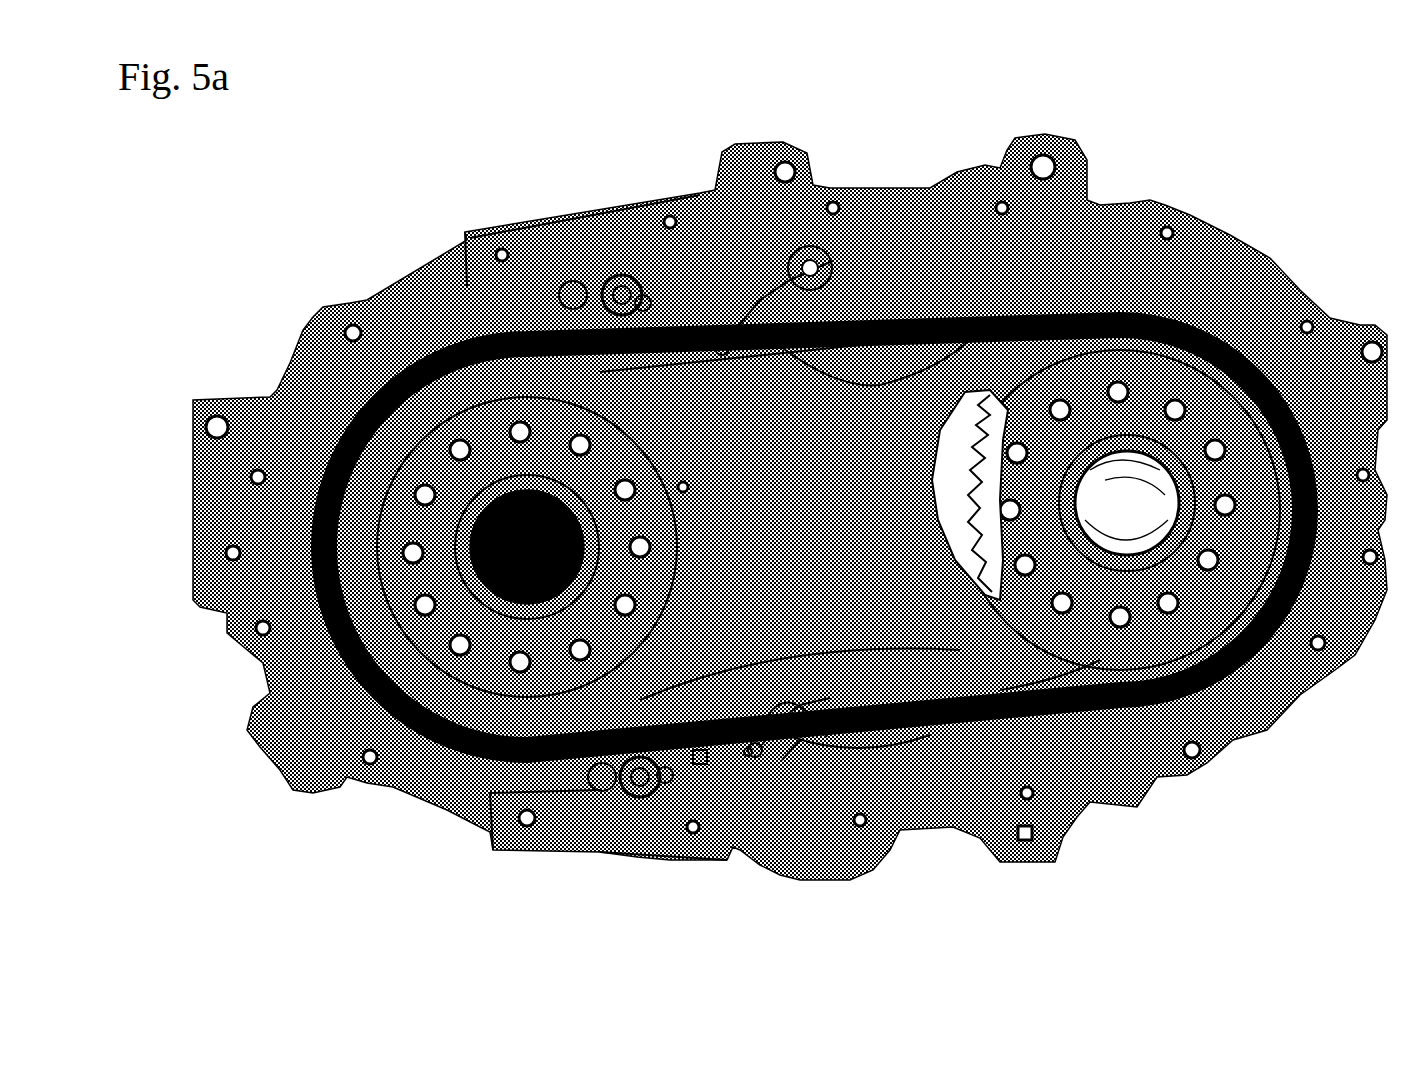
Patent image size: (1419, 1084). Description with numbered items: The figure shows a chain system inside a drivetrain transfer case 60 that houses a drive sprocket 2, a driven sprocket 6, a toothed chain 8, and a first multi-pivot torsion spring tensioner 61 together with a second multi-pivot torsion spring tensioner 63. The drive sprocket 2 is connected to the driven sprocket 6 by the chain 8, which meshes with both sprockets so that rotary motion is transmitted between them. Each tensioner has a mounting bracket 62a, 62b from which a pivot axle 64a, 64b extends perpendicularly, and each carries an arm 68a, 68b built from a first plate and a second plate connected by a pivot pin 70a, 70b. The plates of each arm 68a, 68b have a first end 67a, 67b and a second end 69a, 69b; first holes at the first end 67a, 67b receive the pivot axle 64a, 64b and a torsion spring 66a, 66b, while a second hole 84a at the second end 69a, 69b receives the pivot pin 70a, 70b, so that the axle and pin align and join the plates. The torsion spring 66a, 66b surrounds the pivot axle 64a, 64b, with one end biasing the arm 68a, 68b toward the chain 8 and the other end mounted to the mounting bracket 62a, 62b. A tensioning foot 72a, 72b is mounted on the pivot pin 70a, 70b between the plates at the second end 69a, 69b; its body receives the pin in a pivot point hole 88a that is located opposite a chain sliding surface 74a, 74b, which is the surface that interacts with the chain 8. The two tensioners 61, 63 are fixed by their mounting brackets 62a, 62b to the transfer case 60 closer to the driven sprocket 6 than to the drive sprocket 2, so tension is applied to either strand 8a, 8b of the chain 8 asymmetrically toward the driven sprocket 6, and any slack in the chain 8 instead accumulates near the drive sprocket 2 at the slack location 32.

The drive sprocket 2 is at (1210, 590).
The driven sprocket 6 is at (450, 650).
The chain 8 is at (355, 590).
The first strand 8a is at (668, 400).
The second strand 8b is at (877, 653).
The slack location 32 is at (1065, 672).
The drivetrain transfer case 60 is at (1253, 733).
The first multi-pivot torsion spring tensioner 61 is at (577, 203).
The mounting bracket 62a is at (488, 838).
The mounting bracket 62b is at (530, 230).
The second multi-pivot torsion spring tensioner 63 is at (570, 847).
The pivot axle 64a is at (643, 783).
The pivot axle 64b is at (622, 290).
The torsion spring 66a is at (602, 777).
The torsion spring 66b is at (573, 282).
The first end 67a is at (665, 775).
The first end 67b is at (641, 300).
The arm 68a is at (680, 765).
The arm 68b is at (697, 340).
The second end 69a is at (755, 750).
The second end 69b is at (722, 345).
The pivot pin 70a is at (762, 745).
The pivot pin 70b is at (745, 350).
The tensioning foot 72a is at (772, 750).
The tensioning foot 72b is at (780, 362).
The chain sliding surface 74a is at (792, 737).
The chain sliding surface 74b is at (869, 385).
The second hole 84a is at (748, 752).
The pivot point hole 88a is at (782, 760).